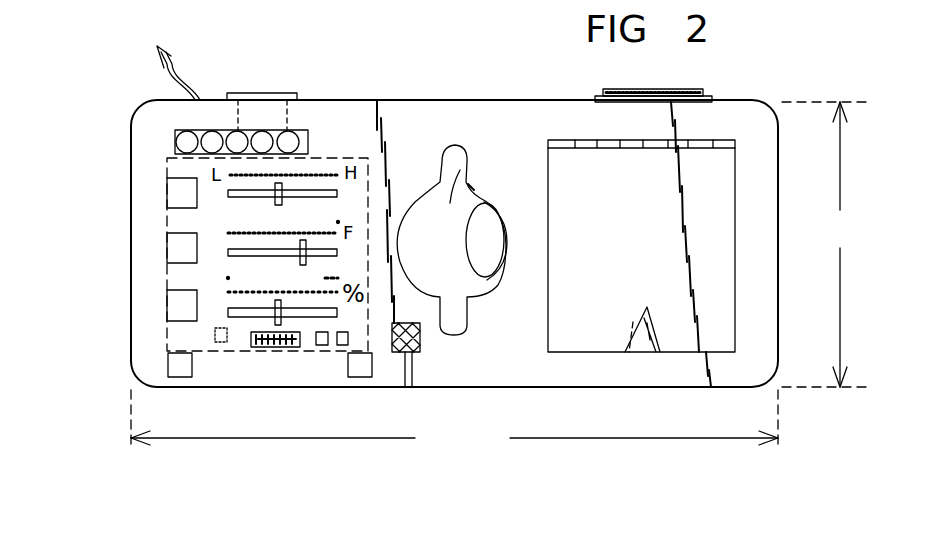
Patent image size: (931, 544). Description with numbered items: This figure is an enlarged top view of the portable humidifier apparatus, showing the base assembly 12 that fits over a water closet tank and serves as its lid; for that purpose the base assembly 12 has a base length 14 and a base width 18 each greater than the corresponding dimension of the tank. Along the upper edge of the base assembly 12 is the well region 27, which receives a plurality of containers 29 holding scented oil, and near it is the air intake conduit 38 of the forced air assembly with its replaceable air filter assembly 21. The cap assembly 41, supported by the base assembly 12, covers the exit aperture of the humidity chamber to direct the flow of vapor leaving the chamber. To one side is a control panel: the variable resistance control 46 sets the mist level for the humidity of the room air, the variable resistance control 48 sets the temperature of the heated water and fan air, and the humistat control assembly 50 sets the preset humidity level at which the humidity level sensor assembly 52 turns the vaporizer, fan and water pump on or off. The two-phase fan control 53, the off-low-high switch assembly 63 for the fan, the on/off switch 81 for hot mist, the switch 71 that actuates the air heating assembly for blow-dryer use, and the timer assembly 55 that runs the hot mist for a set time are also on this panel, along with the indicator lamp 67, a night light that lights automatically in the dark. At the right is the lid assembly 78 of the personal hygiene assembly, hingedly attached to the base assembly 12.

The base assembly 12 is at (508, 130).
The base length 14 is at (454, 424).
The base width 18 is at (827, 244).
The replaceable air filter assembly 21 is at (620, 88).
The well region 27 is at (303, 141).
The containers 29 is at (260, 132).
The air intake conduit 38 is at (697, 92).
The cap assembly 41 is at (467, 165).
The variable resistance control 46 is at (168, 190).
The variable resistance control 48 is at (300, 264).
The humistat control assembly 50 is at (280, 326).
The humidity level sensor assembly 52 is at (420, 340).
The two-phase fan control 53 is at (168, 365).
The timer assembly 55 is at (272, 348).
The off-low-high switch assembly 63 is at (174, 306).
The indicator lamp 67 is at (230, 192).
The switch 71 is at (360, 372).
The lid assembly 78 is at (717, 315).
The on/off switch 81 is at (167, 255).